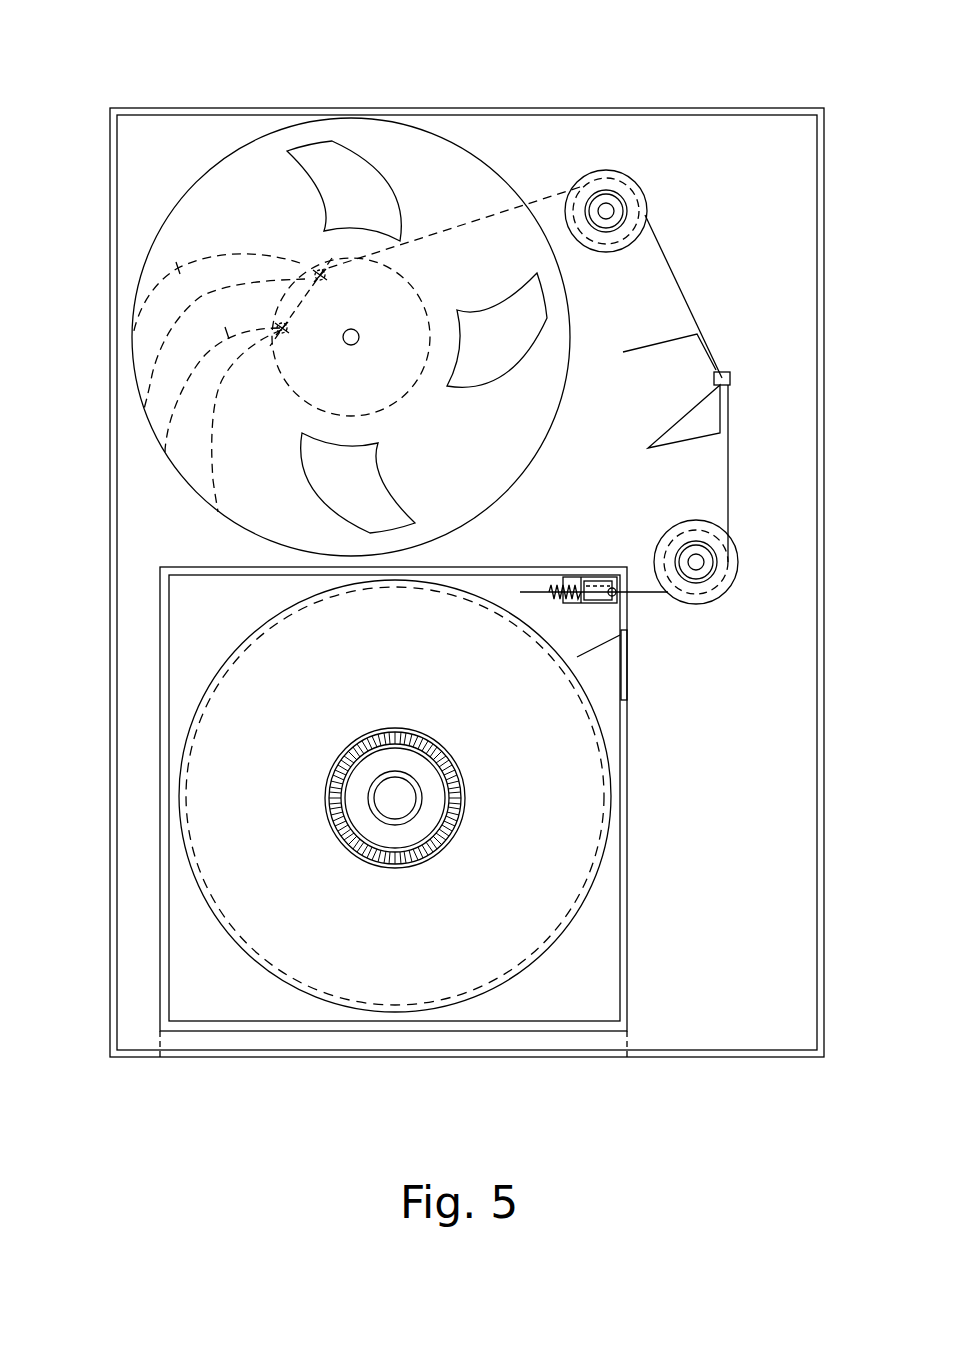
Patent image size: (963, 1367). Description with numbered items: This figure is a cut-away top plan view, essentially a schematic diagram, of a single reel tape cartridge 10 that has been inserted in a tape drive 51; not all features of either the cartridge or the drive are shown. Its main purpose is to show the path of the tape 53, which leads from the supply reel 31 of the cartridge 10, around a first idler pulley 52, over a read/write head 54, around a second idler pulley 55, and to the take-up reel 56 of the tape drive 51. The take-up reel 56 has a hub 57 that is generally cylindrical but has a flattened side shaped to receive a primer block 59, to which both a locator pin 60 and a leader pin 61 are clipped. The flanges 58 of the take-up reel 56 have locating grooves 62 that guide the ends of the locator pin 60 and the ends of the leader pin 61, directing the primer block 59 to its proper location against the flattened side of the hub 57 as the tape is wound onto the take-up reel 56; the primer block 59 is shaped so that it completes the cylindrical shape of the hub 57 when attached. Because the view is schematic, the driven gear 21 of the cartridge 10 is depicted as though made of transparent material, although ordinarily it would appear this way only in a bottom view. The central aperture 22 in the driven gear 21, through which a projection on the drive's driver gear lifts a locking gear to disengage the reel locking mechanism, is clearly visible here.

The single reel tape cartridge 10 is at (648, 770).
The driven gear 21 is at (365, 850).
The central aperture 22 is at (393, 836).
The supply reel 31 is at (452, 962).
The tape drive 51 is at (155, 90).
The first idler pulley 52 is at (705, 532).
The tape 53 is at (733, 455).
The read/write head 54 is at (692, 355).
The second idler pulley 55 is at (606, 170).
The take-up reel 56 is at (178, 172).
The hub 57 is at (320, 378).
The flanges 58 is at (390, 145).
The primer block 59 is at (300, 303).
The locator pin 60 is at (275, 326).
The leader pin 61 is at (318, 270).
The locating grooves 62 is at (227, 333).